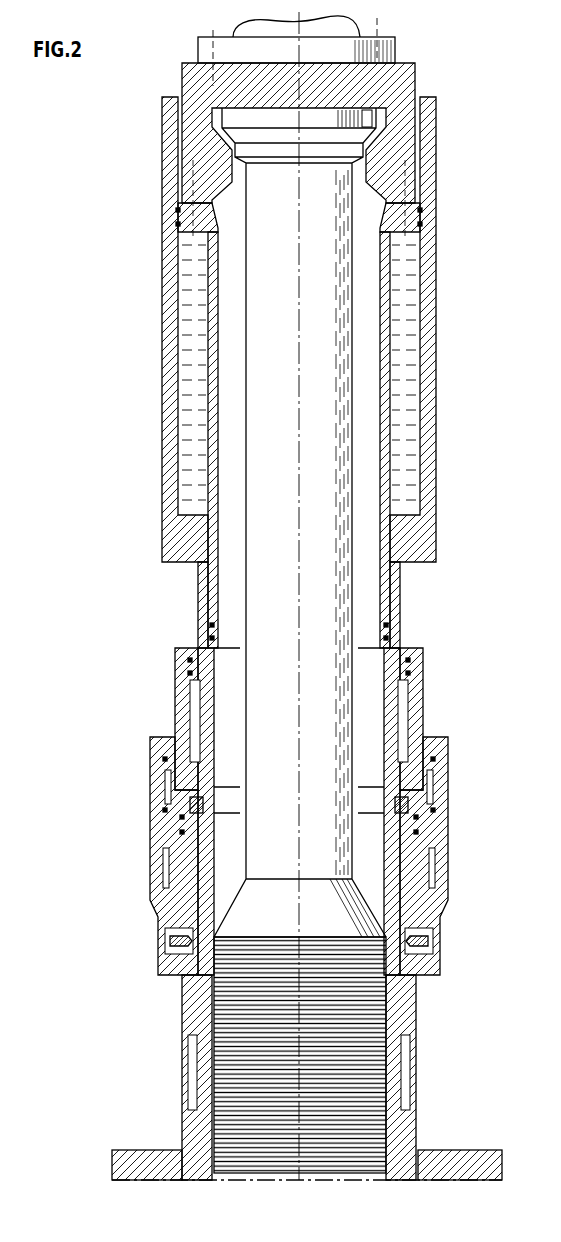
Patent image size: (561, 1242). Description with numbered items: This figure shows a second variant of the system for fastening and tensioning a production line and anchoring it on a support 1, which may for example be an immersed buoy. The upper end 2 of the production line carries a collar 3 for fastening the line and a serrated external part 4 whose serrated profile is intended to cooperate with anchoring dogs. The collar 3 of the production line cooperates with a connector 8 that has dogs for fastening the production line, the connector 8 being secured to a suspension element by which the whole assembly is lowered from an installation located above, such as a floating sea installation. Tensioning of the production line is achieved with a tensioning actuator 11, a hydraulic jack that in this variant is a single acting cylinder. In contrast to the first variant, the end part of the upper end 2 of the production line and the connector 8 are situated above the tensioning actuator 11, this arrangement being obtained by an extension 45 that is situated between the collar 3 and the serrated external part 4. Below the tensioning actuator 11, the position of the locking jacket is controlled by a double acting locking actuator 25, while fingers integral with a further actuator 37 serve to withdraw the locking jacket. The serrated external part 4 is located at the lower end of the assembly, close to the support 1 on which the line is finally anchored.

The support 1 is at (482, 1146).
The upper end of the production line 2 is at (363, 445).
The collar 3 is at (373, 128).
The serrated external part 4 is at (282, 1068).
The connector 8 is at (387, 93).
The tensioning actuator 11 is at (472, 283).
The locking actuator 25 is at (463, 695).
The actuator for withdrawing the locking jacket 37 is at (478, 843).
The extension 45 is at (348, 482).